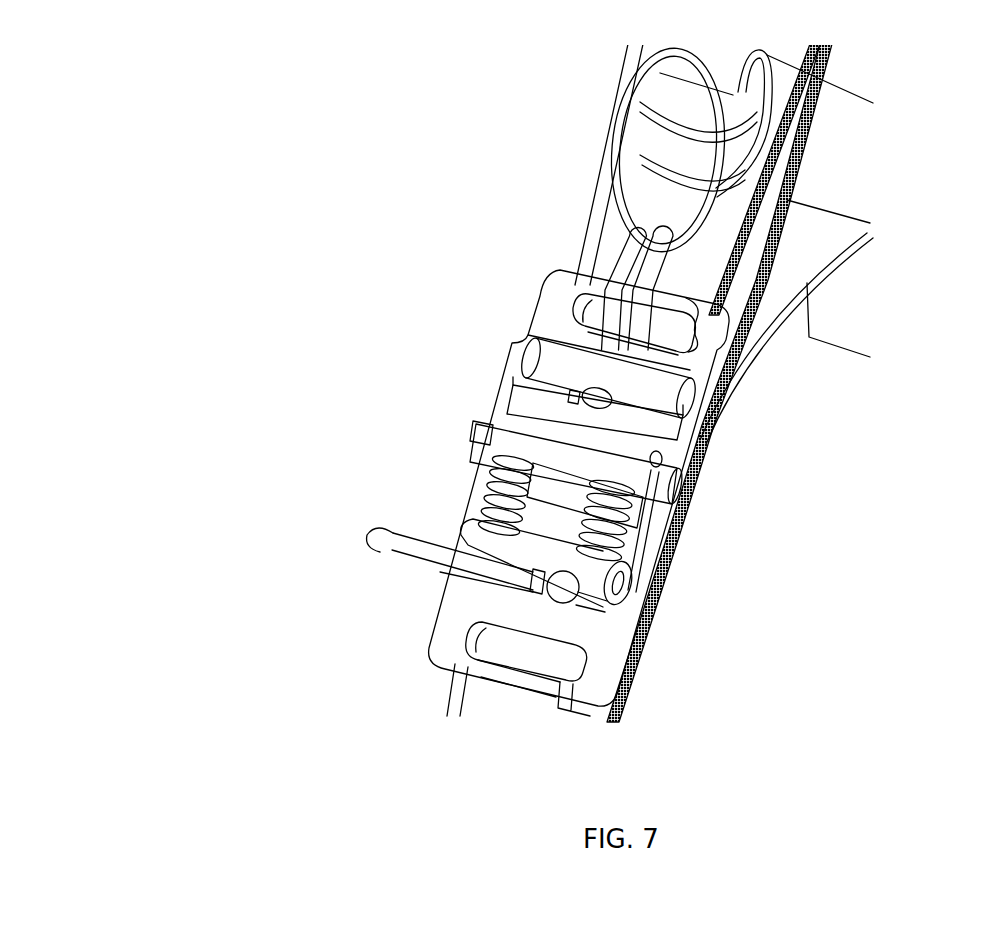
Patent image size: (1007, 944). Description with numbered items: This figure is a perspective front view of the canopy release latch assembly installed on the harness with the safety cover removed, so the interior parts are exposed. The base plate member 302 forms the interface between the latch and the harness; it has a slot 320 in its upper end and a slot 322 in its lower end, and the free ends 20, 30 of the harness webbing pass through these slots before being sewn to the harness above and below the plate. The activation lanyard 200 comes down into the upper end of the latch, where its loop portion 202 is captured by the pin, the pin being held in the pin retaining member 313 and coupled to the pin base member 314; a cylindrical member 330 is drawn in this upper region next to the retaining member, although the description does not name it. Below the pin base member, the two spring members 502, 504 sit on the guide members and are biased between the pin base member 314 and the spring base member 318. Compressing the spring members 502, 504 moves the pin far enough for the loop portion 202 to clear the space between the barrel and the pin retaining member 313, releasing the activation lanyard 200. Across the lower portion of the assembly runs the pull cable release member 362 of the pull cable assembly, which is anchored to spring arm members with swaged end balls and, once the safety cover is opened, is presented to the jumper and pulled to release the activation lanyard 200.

The free end 20 is at (607, 292).
The free end 30 is at (473, 677).
The activation lanyard 200 is at (652, 273).
The loop portion 202 is at (607, 400).
The base plate member 302 is at (535, 303).
The pin retaining member 313 is at (542, 407).
The pin base member 314 is at (482, 427).
The spring base member 318 is at (488, 550).
The slot 320 is at (687, 348).
The slot 322 is at (582, 662).
The roller 330 is at (553, 360).
The pull cable release member 362 is at (433, 553).
The spring member 502 is at (500, 492).
The spring member 504 is at (617, 525).